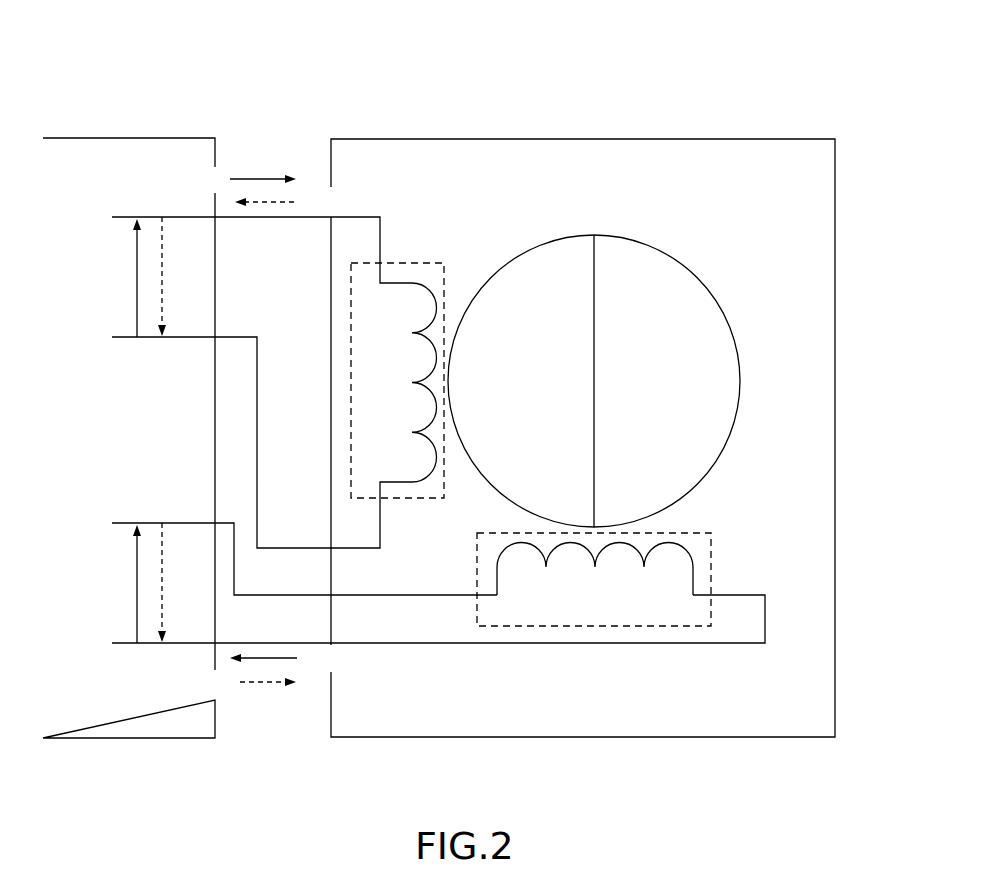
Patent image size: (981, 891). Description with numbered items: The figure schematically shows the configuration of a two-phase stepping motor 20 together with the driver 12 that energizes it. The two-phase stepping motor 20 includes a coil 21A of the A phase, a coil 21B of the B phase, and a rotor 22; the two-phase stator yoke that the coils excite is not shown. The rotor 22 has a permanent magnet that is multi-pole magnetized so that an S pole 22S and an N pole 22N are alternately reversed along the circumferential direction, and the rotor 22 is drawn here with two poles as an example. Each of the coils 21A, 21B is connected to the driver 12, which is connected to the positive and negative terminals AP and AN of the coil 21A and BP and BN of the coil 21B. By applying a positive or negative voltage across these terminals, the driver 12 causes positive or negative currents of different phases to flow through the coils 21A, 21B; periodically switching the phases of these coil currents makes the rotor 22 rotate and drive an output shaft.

The driver 12 is at (129, 138).
The two-phase stepping motor 20 is at (683, 138).
The coil of the A phase 21A is at (417, 263).
The coil of the B phase 21B is at (711, 562).
The rotor 22 is at (693, 266).
The S pole 22S is at (534, 277).
The N pole 22N is at (688, 427).